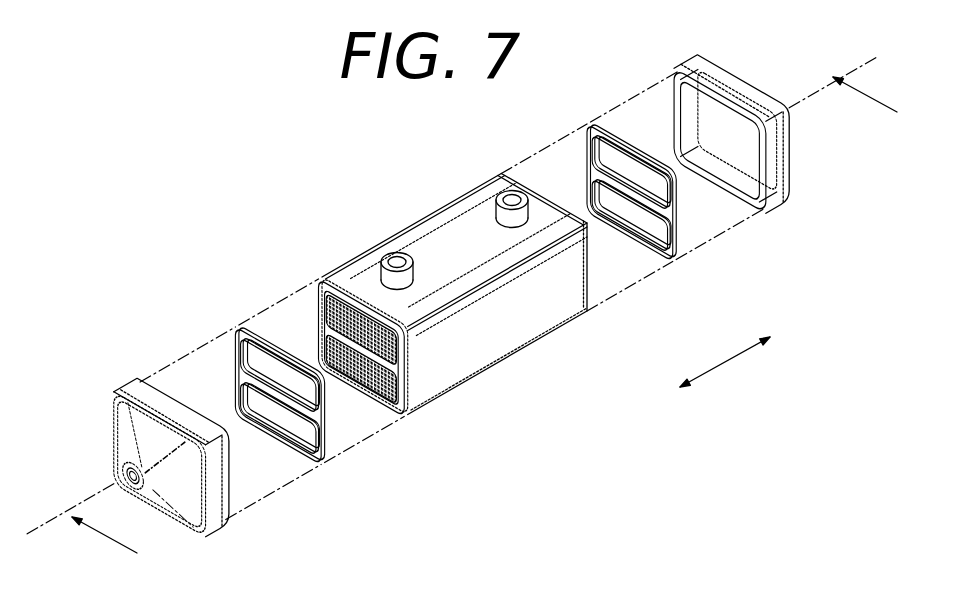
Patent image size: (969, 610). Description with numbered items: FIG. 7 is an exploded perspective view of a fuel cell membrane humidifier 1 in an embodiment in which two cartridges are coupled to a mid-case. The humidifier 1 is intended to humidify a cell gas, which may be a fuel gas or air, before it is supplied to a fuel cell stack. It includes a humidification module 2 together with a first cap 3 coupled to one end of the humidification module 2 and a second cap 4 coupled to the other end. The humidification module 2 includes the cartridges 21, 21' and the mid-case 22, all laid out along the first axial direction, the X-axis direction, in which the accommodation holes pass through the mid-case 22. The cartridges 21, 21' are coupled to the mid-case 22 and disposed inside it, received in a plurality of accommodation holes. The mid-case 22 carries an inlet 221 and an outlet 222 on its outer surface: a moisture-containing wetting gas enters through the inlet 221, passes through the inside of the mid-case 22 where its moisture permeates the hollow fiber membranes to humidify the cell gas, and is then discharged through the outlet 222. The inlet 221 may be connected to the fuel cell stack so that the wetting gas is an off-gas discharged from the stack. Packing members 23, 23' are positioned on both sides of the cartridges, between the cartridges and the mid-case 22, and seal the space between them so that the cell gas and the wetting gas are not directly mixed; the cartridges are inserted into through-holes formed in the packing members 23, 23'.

The fuel cell membrane humidifier 1 is at (129, 175).
The humidification module 2 is at (371, 126).
The first cap 3 is at (137, 388).
The second cap 4 is at (738, 84).
The cartridge 21 is at (335, 289).
The cartridge 21' is at (330, 299).
The mid-case 22 is at (413, 213).
The inlet 221 is at (396, 250).
The outlet 222 is at (503, 192).
The packing member 23 is at (257, 351).
The packing member 23' is at (610, 147).